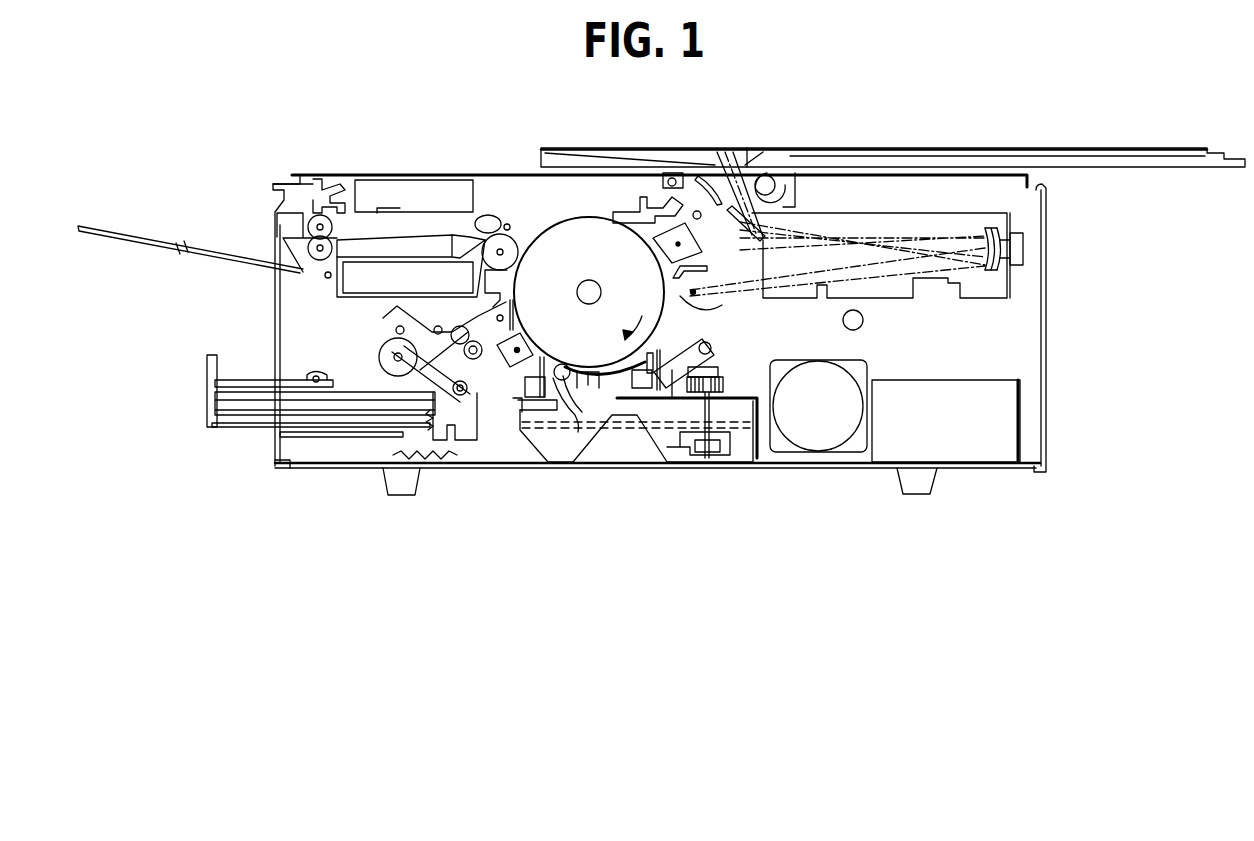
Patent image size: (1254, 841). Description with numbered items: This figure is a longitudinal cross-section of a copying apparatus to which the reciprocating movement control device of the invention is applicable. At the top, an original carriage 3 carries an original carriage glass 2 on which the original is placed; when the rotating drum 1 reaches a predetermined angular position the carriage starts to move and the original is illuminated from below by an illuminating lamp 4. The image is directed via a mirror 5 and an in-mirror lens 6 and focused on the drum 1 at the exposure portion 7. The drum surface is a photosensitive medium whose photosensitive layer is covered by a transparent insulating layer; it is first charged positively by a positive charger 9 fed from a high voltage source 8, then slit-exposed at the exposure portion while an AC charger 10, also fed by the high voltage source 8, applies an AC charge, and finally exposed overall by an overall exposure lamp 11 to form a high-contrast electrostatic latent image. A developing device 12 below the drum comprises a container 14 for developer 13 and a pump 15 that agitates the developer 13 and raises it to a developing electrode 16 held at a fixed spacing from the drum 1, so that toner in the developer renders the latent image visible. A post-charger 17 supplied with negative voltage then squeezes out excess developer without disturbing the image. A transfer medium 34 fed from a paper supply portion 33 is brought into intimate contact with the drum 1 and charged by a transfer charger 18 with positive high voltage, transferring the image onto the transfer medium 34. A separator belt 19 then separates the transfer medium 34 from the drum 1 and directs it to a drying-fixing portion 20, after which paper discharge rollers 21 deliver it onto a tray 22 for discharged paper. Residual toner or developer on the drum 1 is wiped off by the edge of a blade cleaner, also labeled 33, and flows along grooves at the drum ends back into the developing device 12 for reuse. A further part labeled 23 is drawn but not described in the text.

The rotating drum 1 is at (578, 218).
The original carriage glass 2 is at (1010, 148).
The original carriage 3 is at (846, 160).
The illuminating lamp 4 is at (770, 180).
The mirror 5 is at (723, 165).
The in-mirror lens 6 is at (1007, 243).
The exposure portion 7 is at (717, 277).
The high voltage source 8 is at (983, 398).
The positive charger 9 is at (663, 238).
The AC charger 10 is at (705, 302).
The overall exposure lamp 11 is at (863, 320).
The developing device 12 is at (737, 410).
The developer 13 is at (547, 445).
The container 14 is at (590, 449).
The pump 15 is at (688, 450).
The developing electrode 16 is at (595, 380).
The post-charger 17 is at (505, 353).
The transfer charger 18 is at (497, 282).
The separator belt 19 is at (505, 228).
The drying-fixing portion 20 is at (410, 212).
The paper discharge rollers 21 is at (333, 227).
The tray for discharged paper 22 is at (260, 267).
The exposure slit member 23 is at (617, 215).
The paper supply portion 33 is at (230, 420).
The transfer medium 34 is at (258, 407).